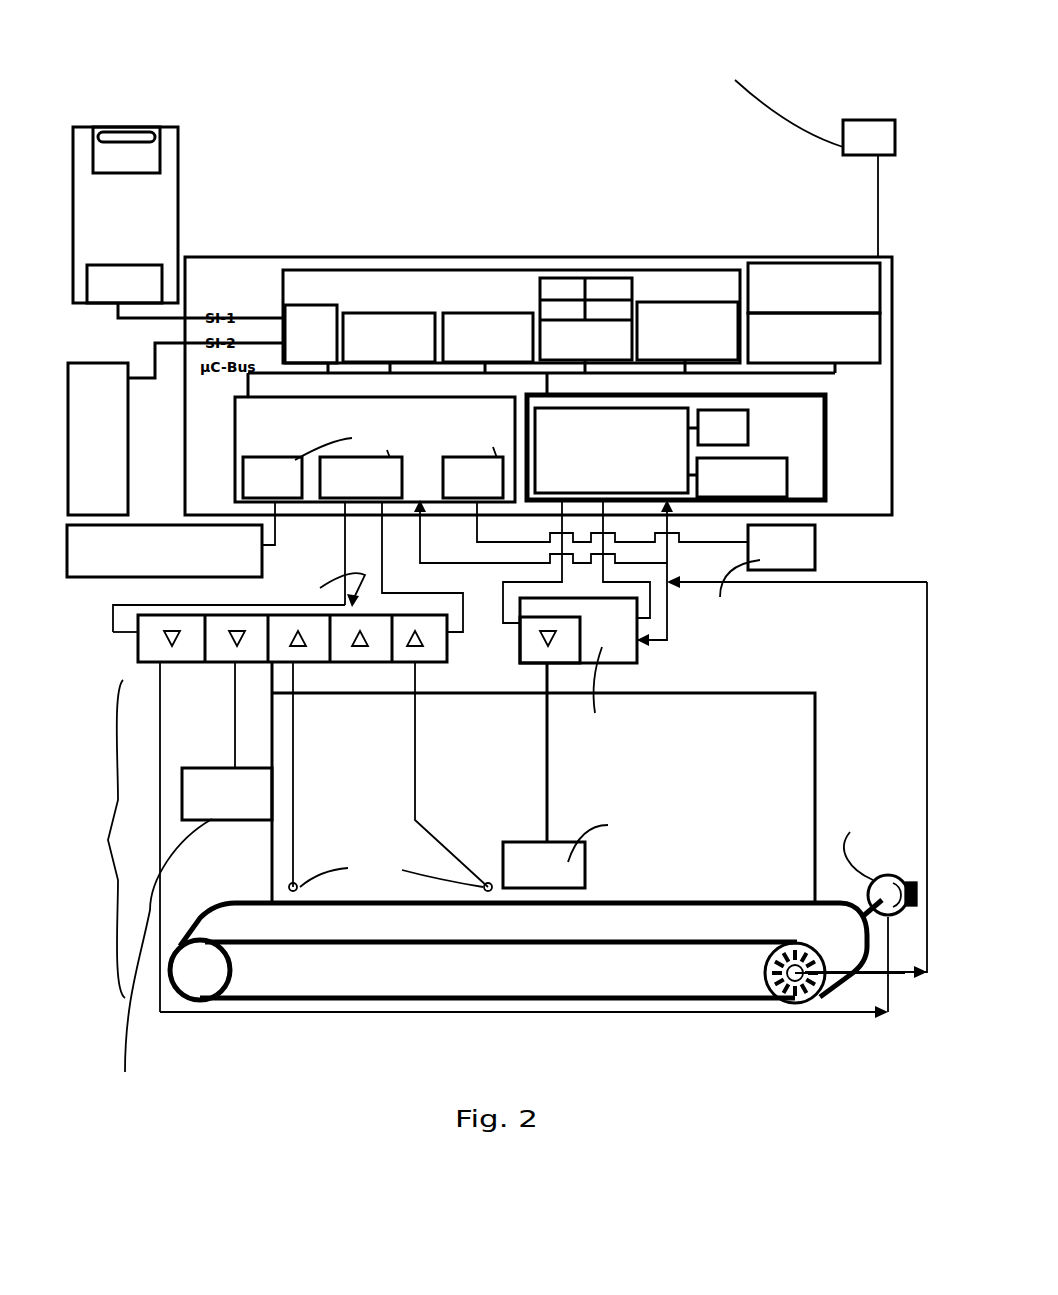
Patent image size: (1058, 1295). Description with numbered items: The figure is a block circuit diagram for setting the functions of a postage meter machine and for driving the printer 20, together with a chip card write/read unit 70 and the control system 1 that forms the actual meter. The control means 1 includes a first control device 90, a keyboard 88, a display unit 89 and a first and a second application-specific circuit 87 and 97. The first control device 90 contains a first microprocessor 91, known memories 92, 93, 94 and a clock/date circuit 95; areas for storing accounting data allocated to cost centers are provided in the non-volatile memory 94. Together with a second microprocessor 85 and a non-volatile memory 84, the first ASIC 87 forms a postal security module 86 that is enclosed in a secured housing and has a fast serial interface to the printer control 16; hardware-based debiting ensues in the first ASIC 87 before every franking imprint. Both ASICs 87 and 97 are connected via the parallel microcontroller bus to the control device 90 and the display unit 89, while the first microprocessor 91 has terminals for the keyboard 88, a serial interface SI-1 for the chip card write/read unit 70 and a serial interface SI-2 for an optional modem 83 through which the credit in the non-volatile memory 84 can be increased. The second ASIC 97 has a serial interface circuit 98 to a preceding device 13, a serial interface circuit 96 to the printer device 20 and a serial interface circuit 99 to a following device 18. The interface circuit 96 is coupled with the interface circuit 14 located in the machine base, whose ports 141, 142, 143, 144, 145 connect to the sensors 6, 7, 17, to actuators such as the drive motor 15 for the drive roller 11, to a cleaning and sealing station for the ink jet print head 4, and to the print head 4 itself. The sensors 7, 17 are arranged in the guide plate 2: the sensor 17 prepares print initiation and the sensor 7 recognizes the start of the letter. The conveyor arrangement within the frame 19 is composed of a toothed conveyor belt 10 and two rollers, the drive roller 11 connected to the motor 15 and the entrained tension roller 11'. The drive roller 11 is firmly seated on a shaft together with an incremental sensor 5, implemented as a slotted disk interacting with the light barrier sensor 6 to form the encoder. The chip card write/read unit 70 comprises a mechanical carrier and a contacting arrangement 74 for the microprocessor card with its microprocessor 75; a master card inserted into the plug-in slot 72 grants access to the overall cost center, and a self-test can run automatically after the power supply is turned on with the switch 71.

The control system 1 is at (223, 147).
The guide plate 2 is at (803, 713).
The ink jet print head 4 is at (535, 862).
The incremental sensor 5 is at (780, 998).
The sensor 6 is at (813, 997).
The sensor 7 is at (488, 890).
The conveyor belt 10 is at (422, 1003).
The drive roller 11 is at (466, 998).
The tension roller 11' is at (178, 967).
The preceding device 13 is at (100, 577).
The interface circuit 14 is at (132, 658).
The drive motor 15 is at (895, 917).
The printer control 16 is at (618, 657).
The sensor 17 is at (293, 890).
The following device 18 is at (815, 545).
The frame of transport device 19 is at (923, 690).
The printer 20 is at (96, 839).
The chip card write/read unit 70 is at (83, 132).
The switch 71 is at (845, 138).
The plug-in slot 72 is at (128, 132).
The contacting arrangement 74 is at (150, 167).
The microprocessor 75 is at (113, 302).
The modem 83 is at (125, 452).
The non-volatile memory 84 is at (787, 475).
The second microprocessor 85 is at (748, 432).
The postal security module 86 is at (825, 400).
The first application-specific circuit 87 is at (682, 453).
The keyboard 88 is at (810, 265).
The display unit 89 is at (748, 266).
The first control device 90 is at (283, 270).
The first microprocessor 91 is at (322, 303).
The memory 92 is at (397, 313).
The memory 93 is at (482, 312).
The non-volatile memory 94 is at (545, 278).
The clock/date circuit 95 is at (670, 302).
The serial interface circuit 96 is at (391, 544).
The second application-specific circuit 97 is at (250, 438).
The serial interface circuit 98 is at (272, 501).
The serial interface circuit 99 is at (581, 510).
The interface port 141 is at (188, 837).
The interface port 142 is at (232, 667).
The interface port 143 is at (269, 774).
The interface port 144 is at (352, 672).
The interface port 145 is at (433, 662).